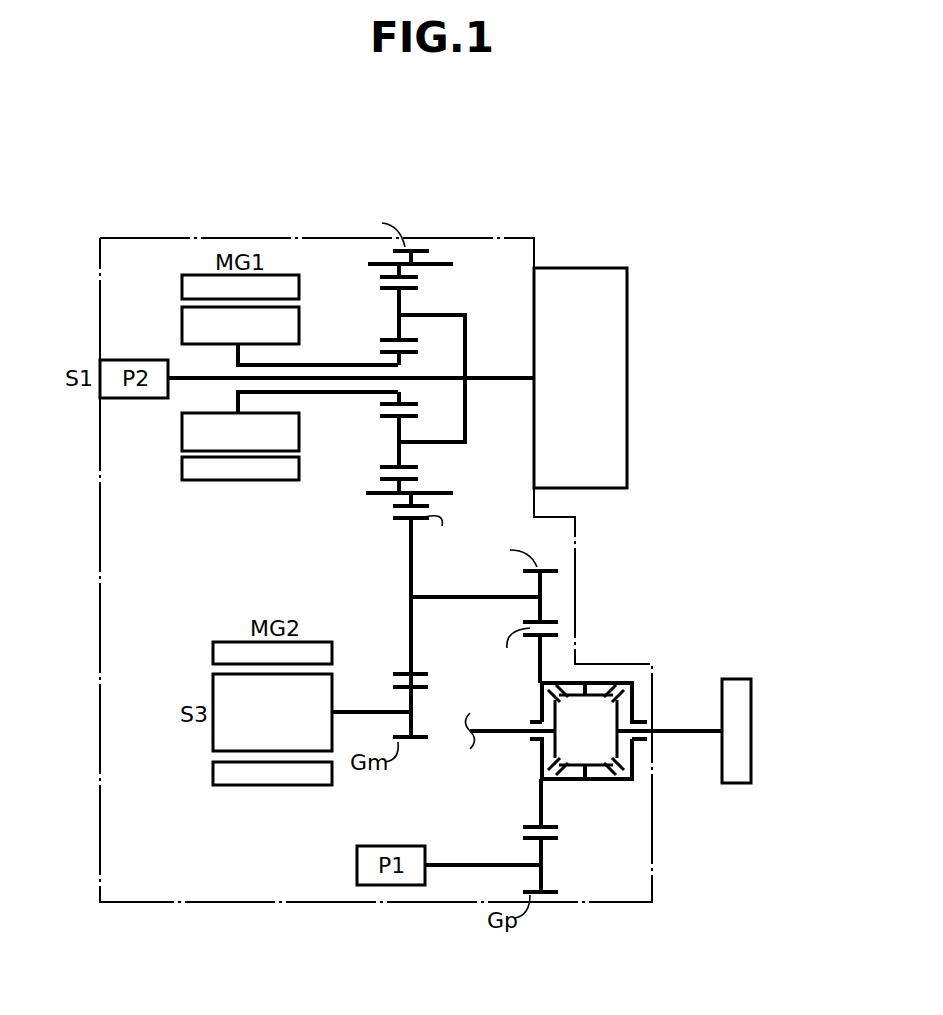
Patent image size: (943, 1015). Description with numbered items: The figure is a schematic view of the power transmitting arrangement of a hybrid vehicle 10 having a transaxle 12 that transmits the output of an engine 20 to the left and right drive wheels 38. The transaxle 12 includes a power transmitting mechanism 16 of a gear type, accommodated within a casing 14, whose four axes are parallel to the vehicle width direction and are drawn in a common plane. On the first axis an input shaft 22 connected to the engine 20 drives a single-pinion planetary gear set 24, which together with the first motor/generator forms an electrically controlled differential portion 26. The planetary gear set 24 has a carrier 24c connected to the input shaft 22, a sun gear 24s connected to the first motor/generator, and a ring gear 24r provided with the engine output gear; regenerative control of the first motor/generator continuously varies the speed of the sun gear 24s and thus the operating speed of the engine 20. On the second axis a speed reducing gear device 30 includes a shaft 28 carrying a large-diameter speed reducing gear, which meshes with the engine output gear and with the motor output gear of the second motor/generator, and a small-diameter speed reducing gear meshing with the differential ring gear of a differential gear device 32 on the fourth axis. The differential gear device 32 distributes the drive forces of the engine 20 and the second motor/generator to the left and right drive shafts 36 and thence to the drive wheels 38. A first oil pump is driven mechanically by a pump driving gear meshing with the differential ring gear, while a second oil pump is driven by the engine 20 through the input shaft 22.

The hybrid vehicle 10 is at (608, 158).
The transaxle 12 is at (244, 172).
The casing 14 is at (98, 537).
The power transmitting mechanism 16 is at (612, 880).
The engine 20 is at (617, 327).
The input shaft 22 is at (500, 384).
The planetary gear set 24 is at (400, 420).
The carrier 24c is at (437, 313).
The sun gear 24s is at (383, 352).
The ring gear 24r is at (413, 479).
The electrically controlled differential portion 26 is at (443, 233).
The shaft 28 is at (465, 599).
The speed reducing gear device 30 is at (563, 547).
The differential gear device 32 is at (623, 803).
The drive shafts 36 is at (506, 736).
The drive wheels 38 is at (735, 688).